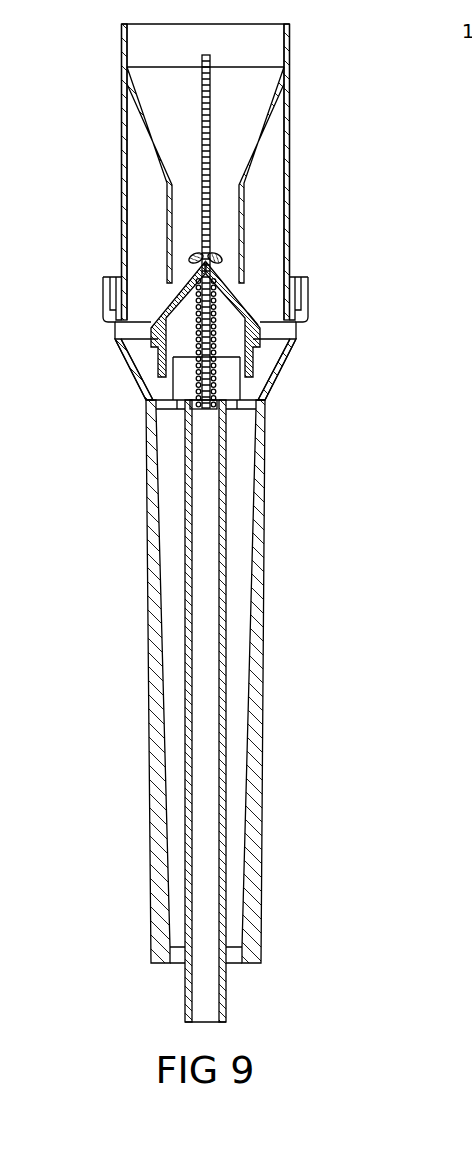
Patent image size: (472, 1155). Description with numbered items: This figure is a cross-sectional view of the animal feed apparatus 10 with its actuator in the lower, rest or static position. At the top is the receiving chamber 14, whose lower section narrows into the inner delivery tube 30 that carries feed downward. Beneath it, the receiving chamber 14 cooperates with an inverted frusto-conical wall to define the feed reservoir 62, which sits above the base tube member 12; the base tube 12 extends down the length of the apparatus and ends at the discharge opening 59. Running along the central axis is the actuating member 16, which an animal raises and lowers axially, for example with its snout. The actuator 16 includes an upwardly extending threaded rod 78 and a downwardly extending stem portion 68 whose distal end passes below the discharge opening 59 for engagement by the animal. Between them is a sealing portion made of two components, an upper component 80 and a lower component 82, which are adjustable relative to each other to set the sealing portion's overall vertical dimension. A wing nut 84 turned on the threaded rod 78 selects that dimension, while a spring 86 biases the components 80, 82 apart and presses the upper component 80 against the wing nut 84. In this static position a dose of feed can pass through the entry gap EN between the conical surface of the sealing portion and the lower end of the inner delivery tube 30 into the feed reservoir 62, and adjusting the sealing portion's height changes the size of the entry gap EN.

The animal feed apparatus 10 is at (84, 70).
The base tube member 12 is at (122, 381).
The receiving chamber 14 is at (294, 182).
The actuating member 16 is at (235, 680).
The inner delivery tube 30 is at (170, 228).
The discharge opening 59 is at (233, 960).
The feed reservoir 62 is at (270, 352).
The stem portion 68 is at (189, 1012).
The threaded rod 78 is at (211, 86).
The upper component 80 is at (255, 298).
The lower component 82 is at (266, 388).
The wing nut 84 is at (218, 257).
The spring 86 is at (200, 346).
The entry gap EN is at (266, 300).